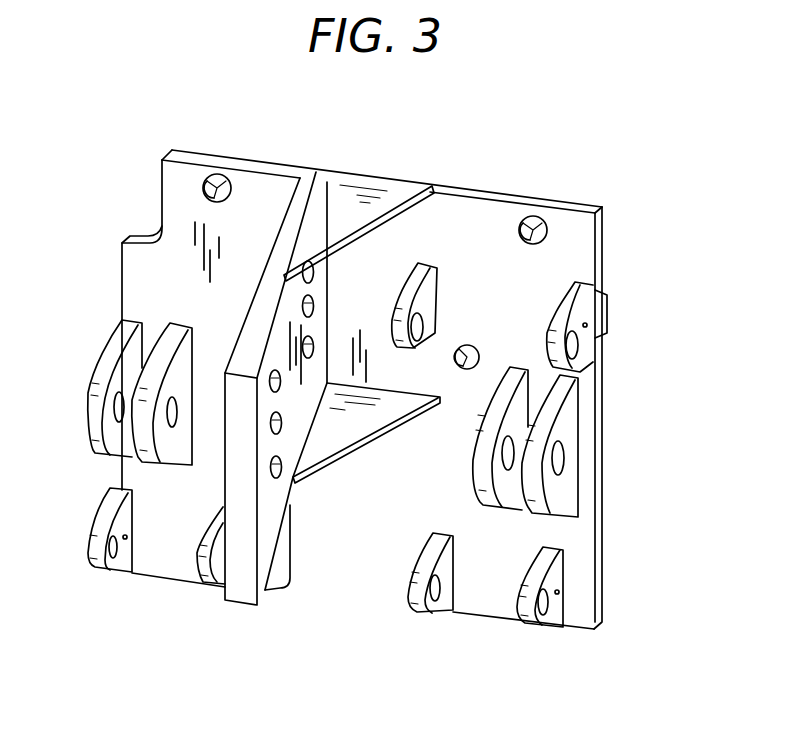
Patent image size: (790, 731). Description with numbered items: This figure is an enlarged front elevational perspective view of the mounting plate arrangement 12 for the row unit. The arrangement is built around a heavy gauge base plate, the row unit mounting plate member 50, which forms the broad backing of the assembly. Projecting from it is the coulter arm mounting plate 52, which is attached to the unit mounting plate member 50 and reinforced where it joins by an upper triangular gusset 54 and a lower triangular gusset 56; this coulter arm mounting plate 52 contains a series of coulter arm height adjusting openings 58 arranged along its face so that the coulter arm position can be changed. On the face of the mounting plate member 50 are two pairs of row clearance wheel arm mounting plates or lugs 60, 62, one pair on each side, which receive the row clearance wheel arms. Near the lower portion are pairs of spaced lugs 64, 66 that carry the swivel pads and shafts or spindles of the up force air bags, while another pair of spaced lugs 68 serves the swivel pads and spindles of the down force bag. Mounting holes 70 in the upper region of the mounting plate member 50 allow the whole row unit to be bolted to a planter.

The mounting plate arrangement 12 is at (365, 157).
The row unit mounting plate member 50 is at (160, 175).
The coulter arm mounting plate 52 is at (260, 318).
The upper triangular gusset 54 is at (325, 197).
The lower triangular gusset 56 is at (357, 415).
The coulter arm height adjusting openings 58 is at (283, 431).
The row clearance wheel arm mounting lugs 60 is at (160, 362).
The row clearance wheel arm mounting lugs 62 is at (505, 387).
The up force air bag lugs 64 is at (203, 565).
The up force air bag lugs 66 is at (523, 612).
The down force bag lugs 68 is at (412, 303).
The mounting holes 70 is at (218, 177).